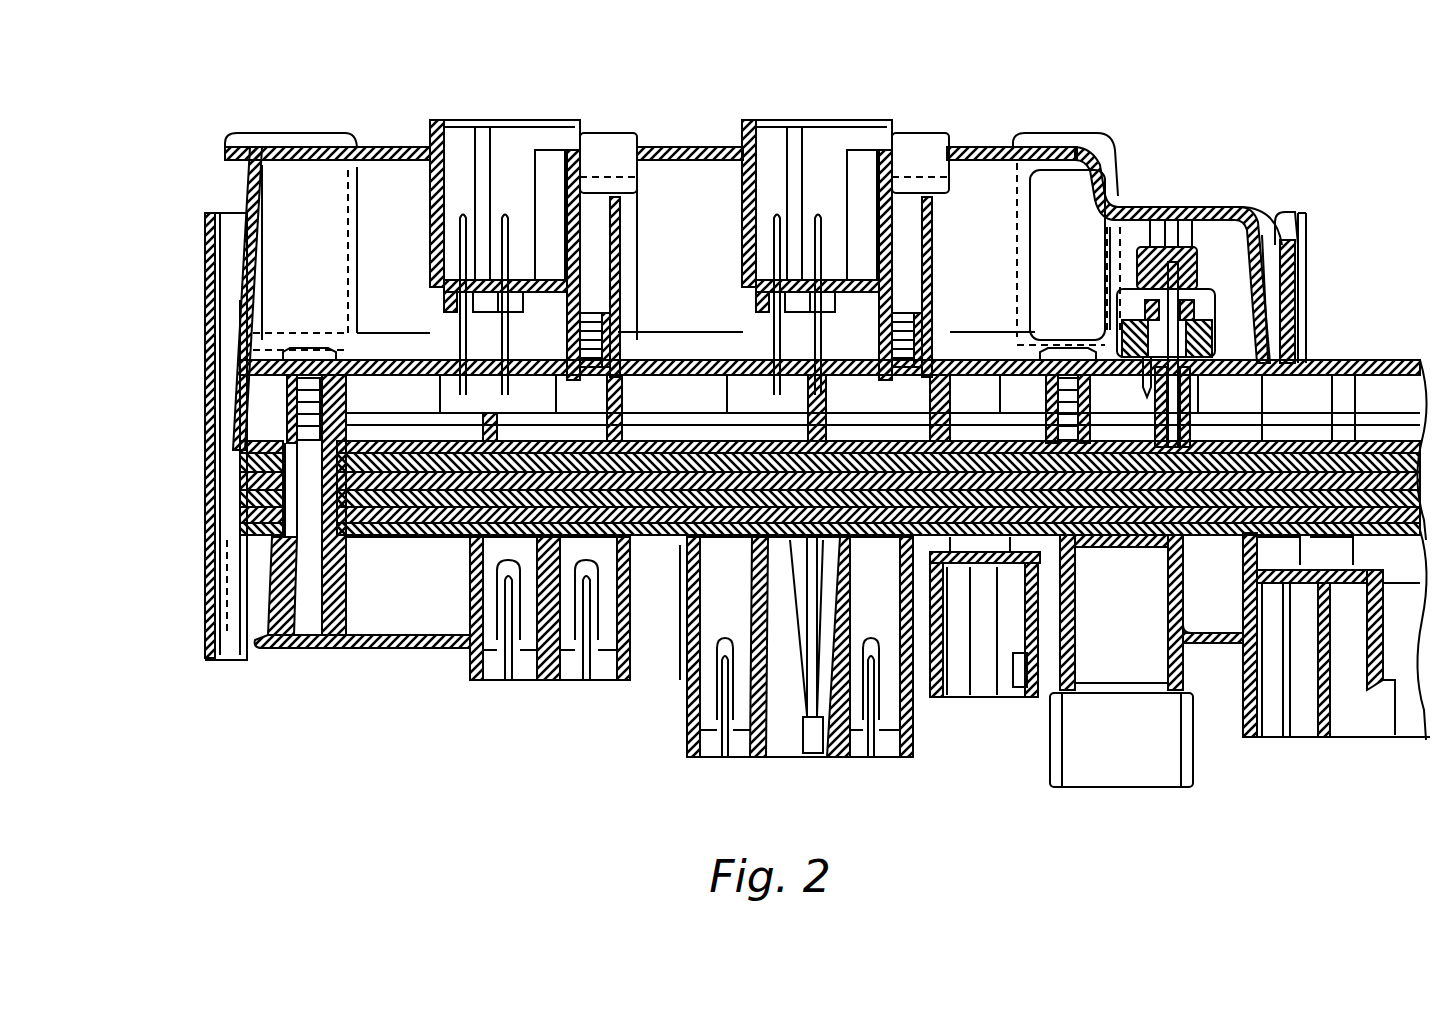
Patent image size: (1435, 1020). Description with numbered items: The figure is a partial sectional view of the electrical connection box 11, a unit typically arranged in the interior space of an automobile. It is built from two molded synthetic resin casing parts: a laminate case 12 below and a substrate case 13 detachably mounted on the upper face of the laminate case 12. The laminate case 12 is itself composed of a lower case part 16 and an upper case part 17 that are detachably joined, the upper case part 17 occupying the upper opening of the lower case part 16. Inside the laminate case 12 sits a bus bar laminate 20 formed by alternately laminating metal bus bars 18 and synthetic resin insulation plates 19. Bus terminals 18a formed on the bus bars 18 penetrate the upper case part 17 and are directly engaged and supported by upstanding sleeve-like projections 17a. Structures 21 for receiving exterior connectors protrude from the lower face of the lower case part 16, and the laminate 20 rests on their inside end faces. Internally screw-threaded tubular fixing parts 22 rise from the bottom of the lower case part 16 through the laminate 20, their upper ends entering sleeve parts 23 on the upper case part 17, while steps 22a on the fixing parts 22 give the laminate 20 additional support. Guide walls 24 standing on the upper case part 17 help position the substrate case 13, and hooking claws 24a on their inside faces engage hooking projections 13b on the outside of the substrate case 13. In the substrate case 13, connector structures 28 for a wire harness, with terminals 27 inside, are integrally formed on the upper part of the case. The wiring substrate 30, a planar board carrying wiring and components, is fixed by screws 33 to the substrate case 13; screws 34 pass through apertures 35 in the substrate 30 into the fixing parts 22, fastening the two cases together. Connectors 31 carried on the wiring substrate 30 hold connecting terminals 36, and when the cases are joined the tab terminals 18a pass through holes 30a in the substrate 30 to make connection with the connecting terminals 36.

The electrical connection box 11 is at (1264, 101).
The laminate case 12 is at (200, 581).
The substrate case 13 is at (260, 185).
The hooking projections 13b is at (1297, 283).
The lower case part 16 is at (405, 648).
The upper case part 17 is at (656, 432).
The sleeve-like projections 17a is at (1155, 420).
The bus bars 18 is at (1150, 490).
The bus terminals 18a is at (1190, 427).
The insulation plates 19 is at (1118, 500).
The bus bar laminate 20 is at (1088, 600).
The structures for receiving exterior connectors 21 is at (548, 680).
The fixing parts 22 is at (348, 600).
The steps 22a is at (228, 630).
The sleeve part 23 is at (347, 396).
The guide walls 24 is at (1306, 257).
The hooking claws 24a is at (1282, 240).
The terminals 27 is at (506, 215).
The connector structures 28 is at (431, 130).
The wiring substrate 30 is at (674, 355).
The holes 30a is at (1193, 375).
The connectors 31 is at (1205, 215).
The screws 33 is at (608, 386).
The screws 34 is at (304, 350).
The apertures 35 is at (345, 355).
The connecting terminals 36 is at (1172, 207).